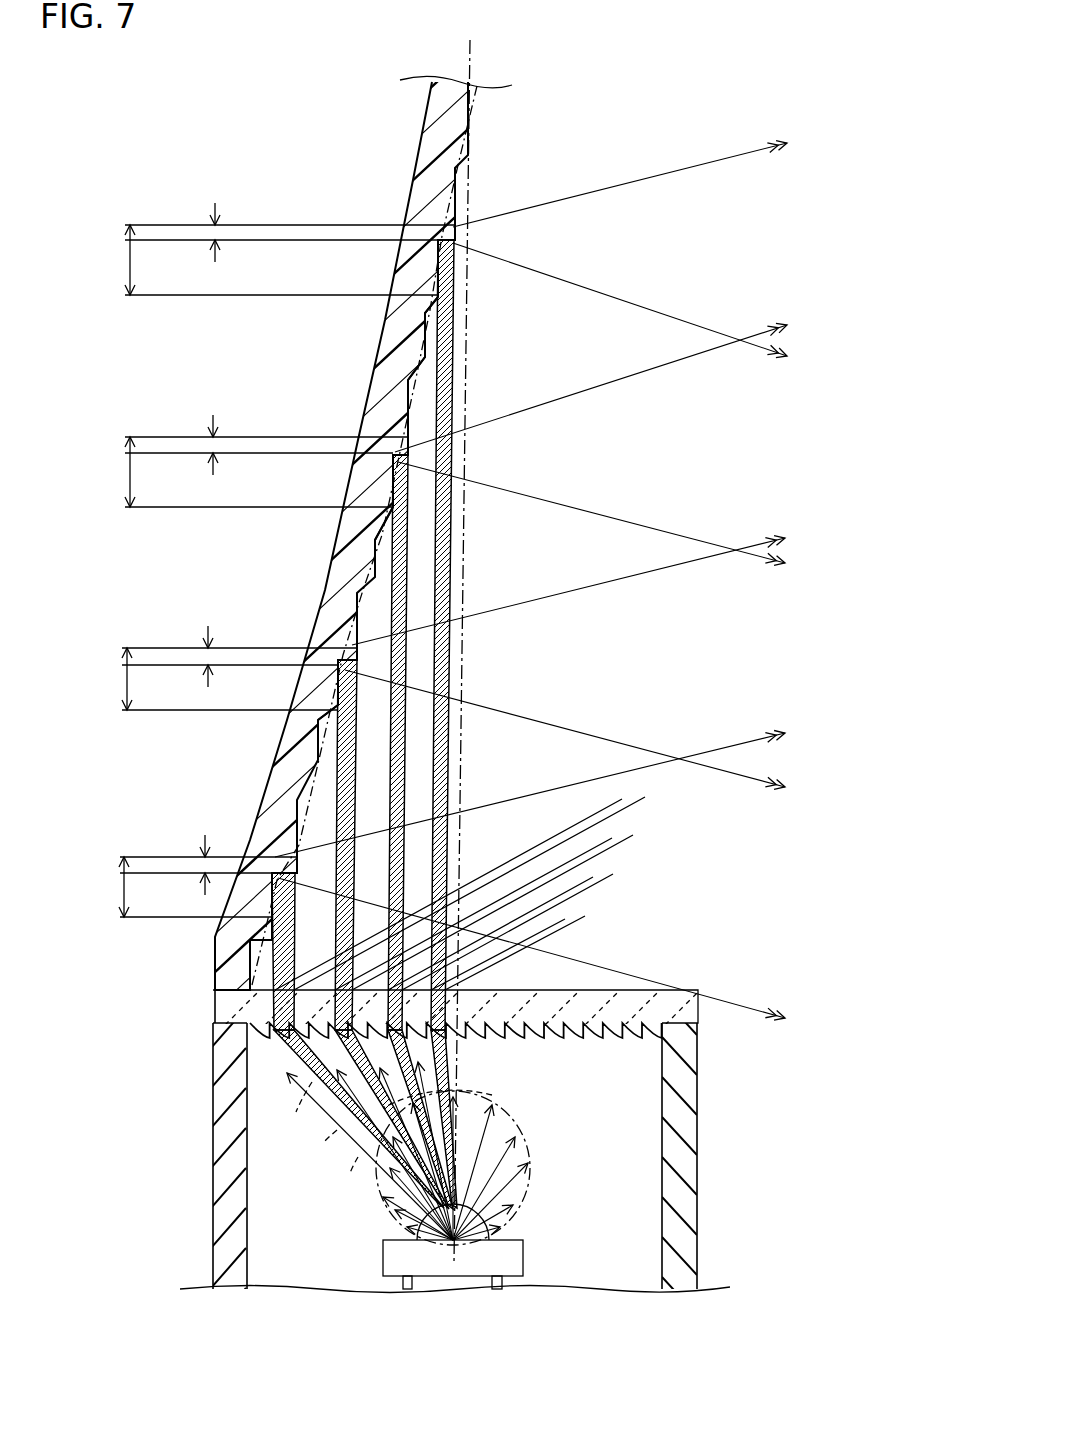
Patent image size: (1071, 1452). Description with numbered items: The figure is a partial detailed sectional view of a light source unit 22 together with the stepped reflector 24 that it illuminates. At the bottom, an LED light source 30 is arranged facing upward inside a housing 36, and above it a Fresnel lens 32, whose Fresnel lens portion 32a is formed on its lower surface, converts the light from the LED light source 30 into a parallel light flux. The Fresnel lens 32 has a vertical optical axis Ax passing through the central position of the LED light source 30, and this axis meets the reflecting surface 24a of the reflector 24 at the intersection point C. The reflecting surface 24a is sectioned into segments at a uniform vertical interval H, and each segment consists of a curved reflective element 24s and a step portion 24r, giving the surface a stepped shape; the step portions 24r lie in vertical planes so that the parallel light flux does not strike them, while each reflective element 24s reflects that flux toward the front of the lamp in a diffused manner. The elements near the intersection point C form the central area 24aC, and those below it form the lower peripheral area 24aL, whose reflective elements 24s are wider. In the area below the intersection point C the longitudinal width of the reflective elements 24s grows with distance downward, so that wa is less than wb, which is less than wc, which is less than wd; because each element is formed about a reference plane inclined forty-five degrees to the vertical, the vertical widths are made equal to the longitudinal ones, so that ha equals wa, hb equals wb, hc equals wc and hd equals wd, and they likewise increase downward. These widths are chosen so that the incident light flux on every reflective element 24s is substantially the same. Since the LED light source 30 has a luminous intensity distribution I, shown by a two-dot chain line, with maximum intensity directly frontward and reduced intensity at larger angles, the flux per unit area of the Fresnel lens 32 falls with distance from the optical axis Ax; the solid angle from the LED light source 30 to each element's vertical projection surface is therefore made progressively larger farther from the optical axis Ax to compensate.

The light source unit 22 is at (212, 1103).
The reflector 24 is at (367, 384).
The reflecting surface 24a is at (380, 538).
The central area 24aC is at (442, 343).
The lower peripheral area 24aL is at (450, 727).
The step portion 24r is at (452, 272).
The reflective element 24s is at (458, 236).
The LED light source 30 is at (520, 1207).
The Fresnel lens 32 is at (615, 1030).
The Fresnel lens portion 32a is at (612, 1042).
The housing 36 is at (683, 1165).
The intersection point C is at (474, 157).
The optical axis Ax is at (464, 462).
The luminous intensity distribution I is at (500, 1118).
The uniform interval H is at (274, 571).
The vertical width of first reflective element ha is at (281, 232).
The vertical width of second reflective element hb is at (259, 445).
The vertical width of third reflective element hc is at (230, 656).
The vertical width of fourth reflective element hd is at (196, 865).
The longitudinal width of first reflective element wa is at (518, 933).
The longitudinal width of second reflective element wb is at (545, 892).
The longitudinal width of third reflective element wc is at (562, 851).
The longitudinal width of fourth reflective element wd is at (572, 809).